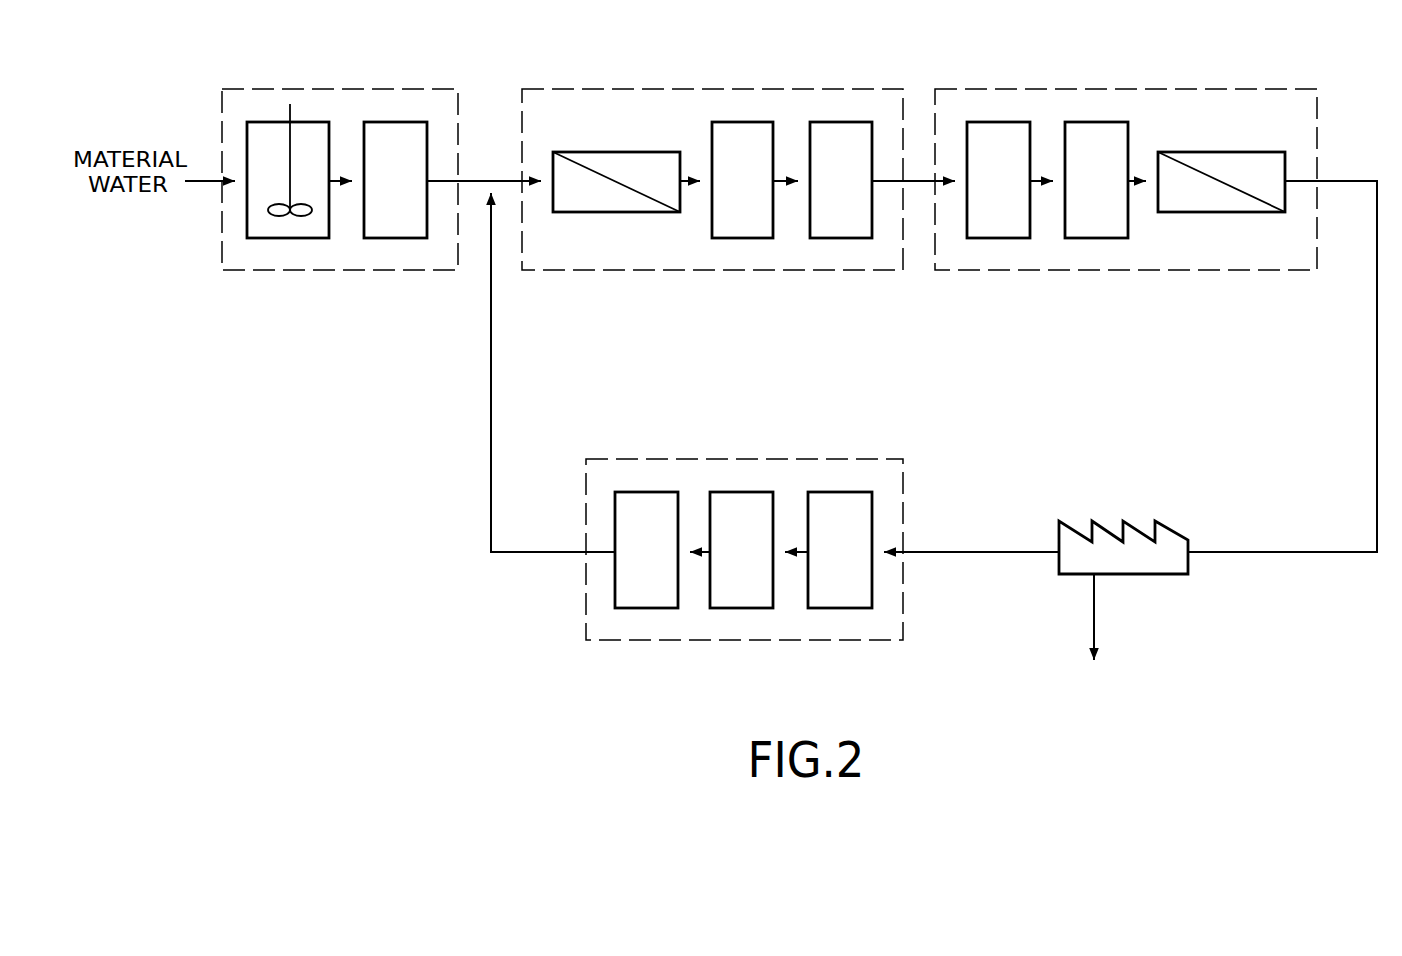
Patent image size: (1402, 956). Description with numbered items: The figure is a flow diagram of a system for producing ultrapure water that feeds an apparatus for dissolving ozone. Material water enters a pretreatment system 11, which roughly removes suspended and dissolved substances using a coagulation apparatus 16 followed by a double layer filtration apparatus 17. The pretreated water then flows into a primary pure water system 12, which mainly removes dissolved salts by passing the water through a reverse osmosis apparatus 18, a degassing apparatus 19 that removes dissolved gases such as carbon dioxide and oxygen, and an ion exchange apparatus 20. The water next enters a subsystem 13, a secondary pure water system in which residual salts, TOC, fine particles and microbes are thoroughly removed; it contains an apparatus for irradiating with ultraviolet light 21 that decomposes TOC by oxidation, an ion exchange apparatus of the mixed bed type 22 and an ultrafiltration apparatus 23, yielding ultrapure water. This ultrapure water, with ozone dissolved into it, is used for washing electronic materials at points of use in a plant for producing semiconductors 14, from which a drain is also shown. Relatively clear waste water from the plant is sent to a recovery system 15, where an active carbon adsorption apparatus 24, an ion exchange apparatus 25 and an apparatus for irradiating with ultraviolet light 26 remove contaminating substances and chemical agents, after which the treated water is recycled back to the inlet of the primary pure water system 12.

The pretreatment system 11 is at (337, 88).
The primary pure water system 12 is at (717, 88).
The subsystem 13 is at (1082, 88).
The plant for producing semiconductors 14 is at (1150, 574).
The recovery system 15 is at (735, 458).
The coagulation apparatus 16 is at (290, 238).
The double layer filtration apparatus 17 is at (395, 238).
The reverse osmosis apparatus 18 is at (588, 212).
The degassing apparatus 19 is at (742, 238).
The ion exchange apparatus 20 is at (840, 238).
The apparatus for irradiating with ultraviolet light 21 is at (995, 238).
The ion exchange apparatus of the mixed bed type 22 is at (1098, 238).
The ultrafiltration apparatus 23 is at (1222, 212).
The active carbon adsorption apparatus 24 is at (842, 608).
The ion exchange apparatus 25 is at (748, 608).
The apparatus for irradiating with ultraviolet light 26 is at (642, 608).